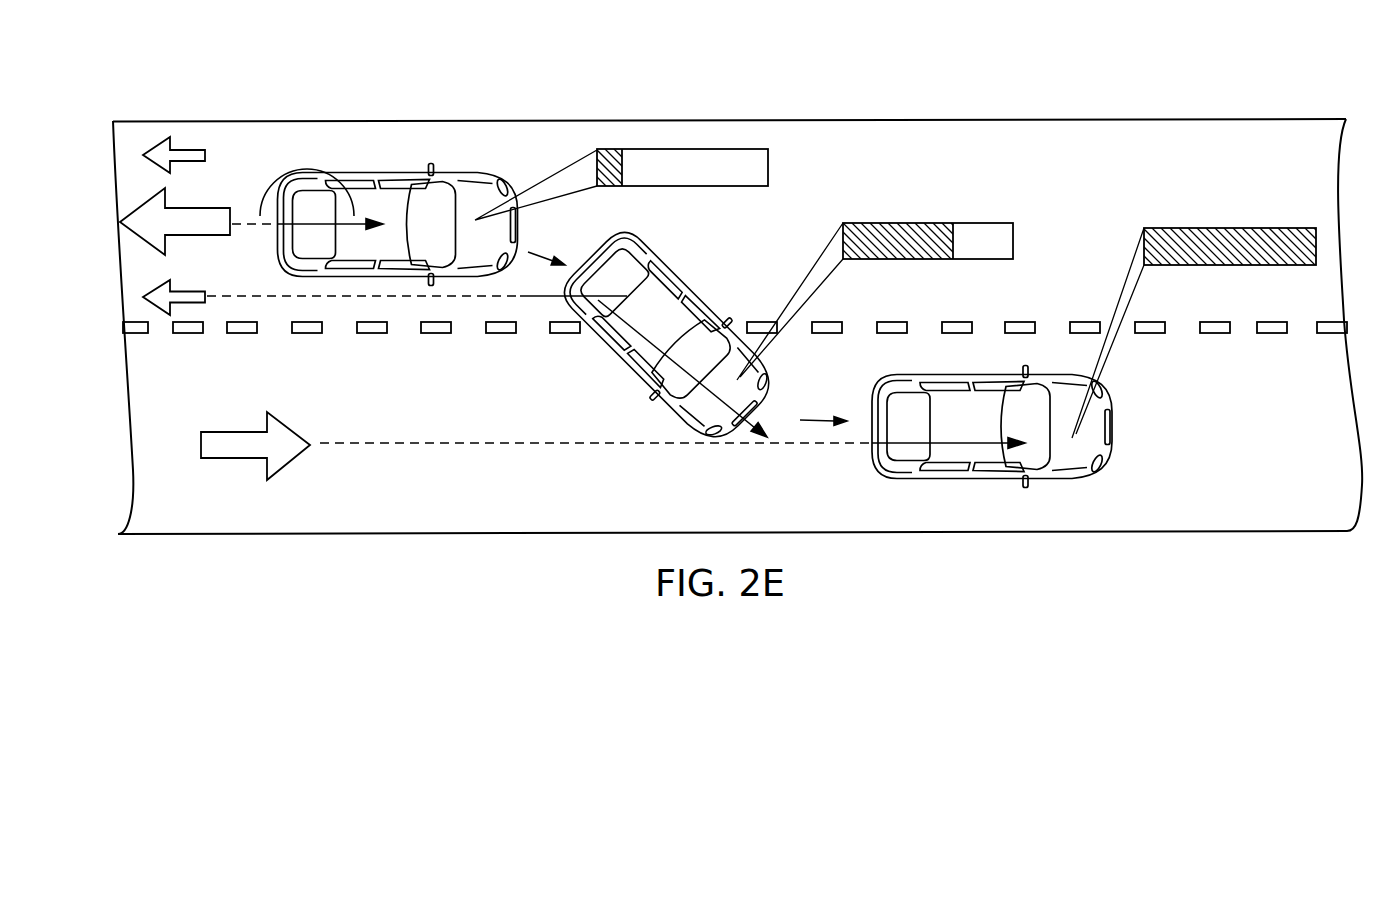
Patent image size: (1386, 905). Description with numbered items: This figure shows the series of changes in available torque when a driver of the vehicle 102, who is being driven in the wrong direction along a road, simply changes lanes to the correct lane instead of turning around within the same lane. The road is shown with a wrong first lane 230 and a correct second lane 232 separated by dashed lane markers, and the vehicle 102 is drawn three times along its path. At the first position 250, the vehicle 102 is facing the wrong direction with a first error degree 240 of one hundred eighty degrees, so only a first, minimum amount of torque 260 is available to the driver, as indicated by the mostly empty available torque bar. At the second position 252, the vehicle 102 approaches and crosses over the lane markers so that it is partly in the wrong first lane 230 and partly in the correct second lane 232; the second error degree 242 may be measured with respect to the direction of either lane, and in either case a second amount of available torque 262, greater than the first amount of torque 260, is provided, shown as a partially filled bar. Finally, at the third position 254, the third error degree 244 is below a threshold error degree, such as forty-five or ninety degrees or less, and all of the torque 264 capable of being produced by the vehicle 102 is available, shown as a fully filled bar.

The vehicle 102 is at (393, 205).
The first lane 230 is at (1092, 145).
The second lane 232 is at (1228, 515).
The first error degree 240 is at (312, 169).
The second error degree 242 is at (653, 342).
The third error degree 244 is at (948, 425).
The first position 250 is at (502, 140).
The second position 252 is at (588, 379).
The third position 254 is at (1110, 505).
The first amount of torque 260 is at (622, 130).
The second amount of available torque 262 is at (952, 197).
The torque 264 is at (1314, 203).